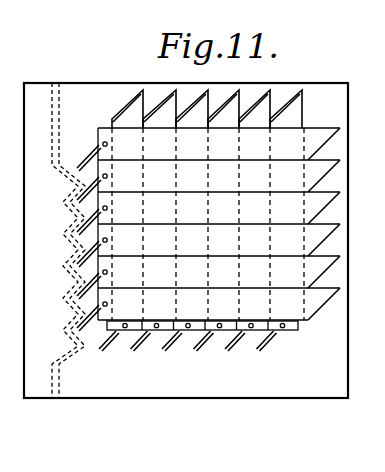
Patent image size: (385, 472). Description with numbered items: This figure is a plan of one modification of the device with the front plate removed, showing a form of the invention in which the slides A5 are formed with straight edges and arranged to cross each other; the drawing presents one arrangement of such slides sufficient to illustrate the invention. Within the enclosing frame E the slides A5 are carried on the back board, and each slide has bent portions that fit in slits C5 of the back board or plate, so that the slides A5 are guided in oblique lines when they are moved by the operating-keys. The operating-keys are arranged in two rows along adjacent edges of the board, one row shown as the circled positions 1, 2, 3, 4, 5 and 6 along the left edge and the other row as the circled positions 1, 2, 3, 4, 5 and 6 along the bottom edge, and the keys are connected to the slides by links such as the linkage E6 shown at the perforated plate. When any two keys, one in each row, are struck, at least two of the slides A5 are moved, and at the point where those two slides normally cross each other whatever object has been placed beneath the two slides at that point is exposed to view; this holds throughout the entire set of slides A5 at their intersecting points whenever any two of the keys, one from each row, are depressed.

The casing frame E is at (338, 355).
The perforated plate E6 is at (108, 144).
The slides A5 is at (298, 116).
The slits C5 is at (270, 366).
The position 1 is at (63, 284).
The position 2 is at (79, 300).
The position 3 is at (95, 316).
The position 4 is at (111, 332).
The position 5 is at (127, 348).
The position 6 is at (143, 364).